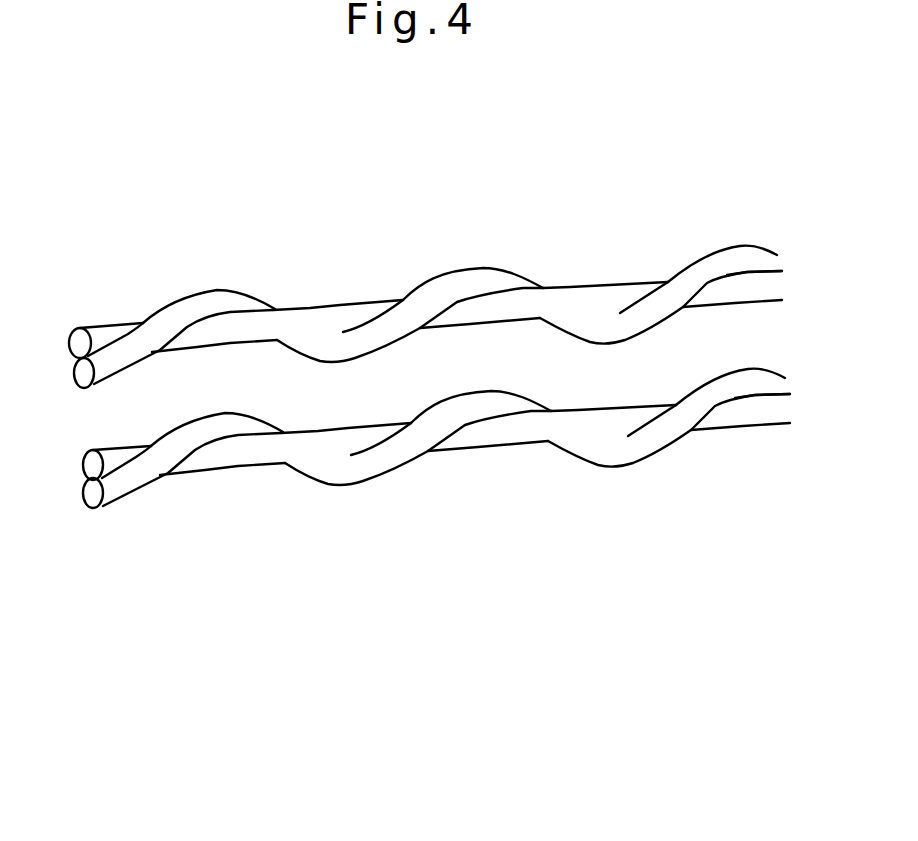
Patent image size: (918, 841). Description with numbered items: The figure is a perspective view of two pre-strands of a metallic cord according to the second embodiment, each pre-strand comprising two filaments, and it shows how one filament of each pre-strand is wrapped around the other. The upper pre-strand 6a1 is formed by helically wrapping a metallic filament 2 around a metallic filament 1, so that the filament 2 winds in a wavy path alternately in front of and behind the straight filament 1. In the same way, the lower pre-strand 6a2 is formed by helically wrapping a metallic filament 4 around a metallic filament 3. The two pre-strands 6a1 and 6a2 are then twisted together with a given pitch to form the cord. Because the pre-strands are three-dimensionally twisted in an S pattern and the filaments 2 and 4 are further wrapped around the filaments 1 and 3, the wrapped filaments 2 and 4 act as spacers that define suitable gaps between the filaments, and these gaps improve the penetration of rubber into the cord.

The metallic filament 1 is at (109, 336).
The metallic filament 2 is at (118, 358).
The metallic filament 3 is at (108, 456).
The metallic filament 4 is at (142, 468).
The pre-strand 6a1 is at (425, 312).
The pre-strand 6a2 is at (415, 473).